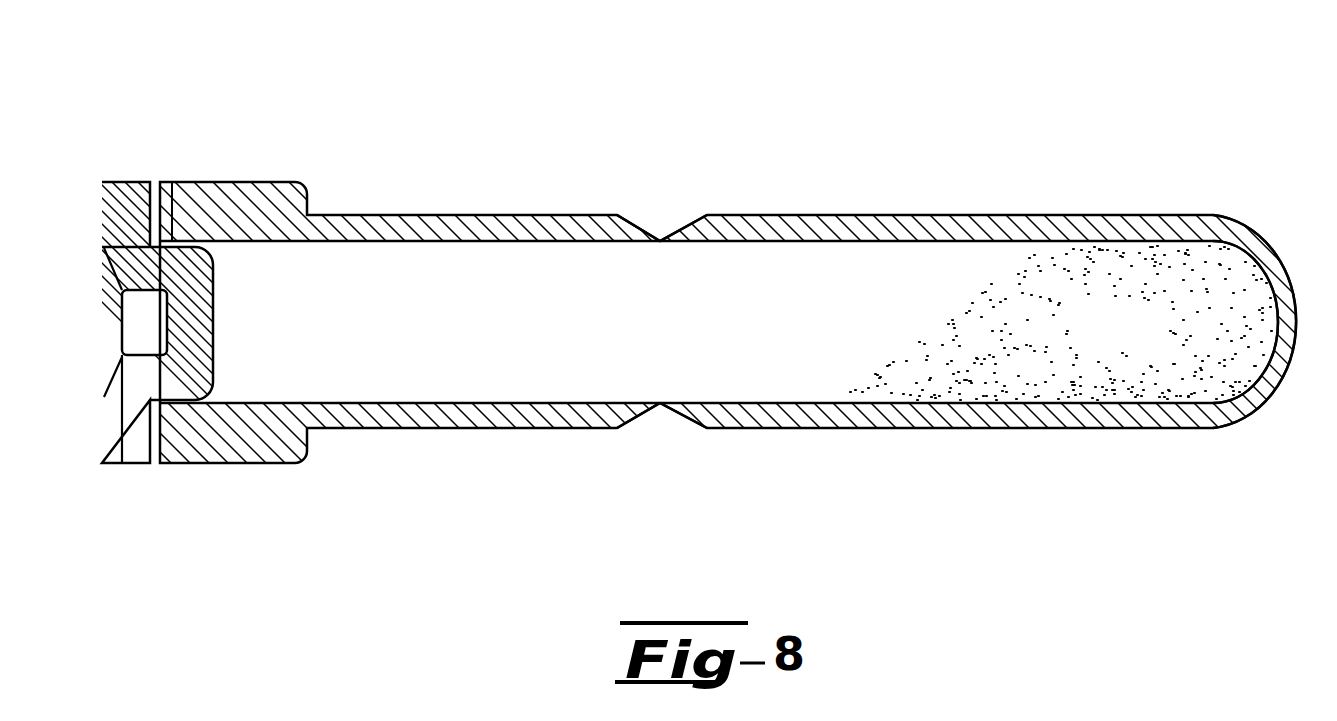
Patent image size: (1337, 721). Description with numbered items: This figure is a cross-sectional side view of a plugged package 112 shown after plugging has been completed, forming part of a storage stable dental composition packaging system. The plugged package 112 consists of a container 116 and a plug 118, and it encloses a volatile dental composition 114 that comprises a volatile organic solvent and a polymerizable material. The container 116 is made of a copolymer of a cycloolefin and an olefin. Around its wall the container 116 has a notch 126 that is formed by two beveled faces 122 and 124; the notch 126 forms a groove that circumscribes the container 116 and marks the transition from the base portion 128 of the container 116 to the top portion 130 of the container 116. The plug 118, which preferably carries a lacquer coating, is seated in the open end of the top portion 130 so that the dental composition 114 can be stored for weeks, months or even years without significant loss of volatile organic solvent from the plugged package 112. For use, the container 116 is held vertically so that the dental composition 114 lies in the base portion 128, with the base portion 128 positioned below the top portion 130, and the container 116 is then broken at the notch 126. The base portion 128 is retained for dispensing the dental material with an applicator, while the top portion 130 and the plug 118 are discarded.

The plugged package 112 is at (425, 110).
The volatile dental composition 114 is at (1157, 345).
The container 116 is at (668, 360).
The plug 118 is at (123, 182).
The beveled face 122 is at (637, 420).
The beveled face 124 is at (687, 418).
The notch 126 is at (662, 240).
The base portion 128 is at (1165, 428).
The top portion 130 is at (367, 431).